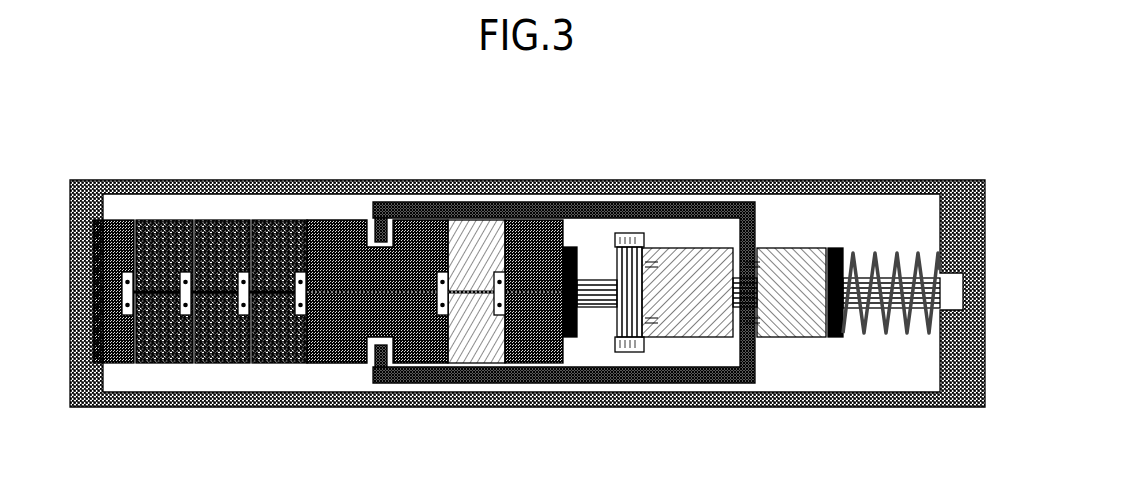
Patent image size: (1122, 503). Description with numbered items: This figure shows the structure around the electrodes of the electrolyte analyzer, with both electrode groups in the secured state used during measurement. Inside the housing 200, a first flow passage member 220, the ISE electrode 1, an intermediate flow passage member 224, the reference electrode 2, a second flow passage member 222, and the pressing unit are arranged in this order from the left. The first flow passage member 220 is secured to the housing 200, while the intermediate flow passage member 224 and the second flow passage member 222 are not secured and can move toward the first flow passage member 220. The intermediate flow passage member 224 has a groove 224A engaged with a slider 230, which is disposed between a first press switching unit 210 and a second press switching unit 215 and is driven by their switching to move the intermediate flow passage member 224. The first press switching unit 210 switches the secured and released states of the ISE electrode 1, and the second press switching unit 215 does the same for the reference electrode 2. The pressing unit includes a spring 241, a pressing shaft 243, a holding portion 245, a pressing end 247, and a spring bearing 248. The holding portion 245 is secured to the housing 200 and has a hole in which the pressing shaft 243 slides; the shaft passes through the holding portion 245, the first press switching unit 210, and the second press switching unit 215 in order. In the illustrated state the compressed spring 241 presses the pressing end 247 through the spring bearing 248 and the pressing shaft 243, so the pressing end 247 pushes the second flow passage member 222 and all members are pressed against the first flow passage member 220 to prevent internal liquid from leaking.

The housing 200 is at (203, 188).
The ISE electrode 1 is at (307, 365).
The first flow passage member 220 is at (118, 353).
The intermediate flow passage member 224 is at (342, 358).
The groove 224A is at (369, 226).
The slider 230 is at (467, 208).
The reference electrode 2 is at (473, 350).
The second flow passage member 222 is at (532, 350).
The pressing end 247 is at (568, 338).
The holding portion 245 is at (603, 280).
The pressing shaft 243 is at (603, 280).
The first press switching unit 210 is at (693, 257).
The second press switching unit 215 is at (777, 334).
The spring bearing 248 is at (843, 250).
The spring 241 is at (896, 257).